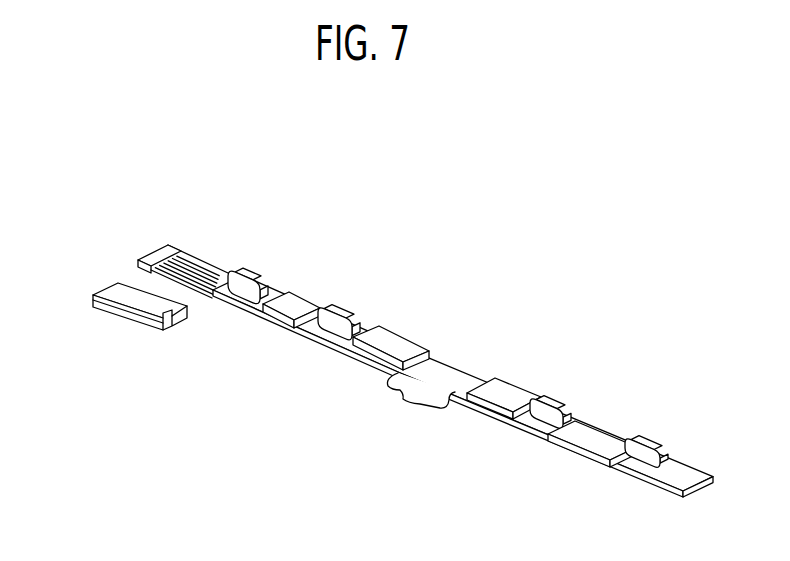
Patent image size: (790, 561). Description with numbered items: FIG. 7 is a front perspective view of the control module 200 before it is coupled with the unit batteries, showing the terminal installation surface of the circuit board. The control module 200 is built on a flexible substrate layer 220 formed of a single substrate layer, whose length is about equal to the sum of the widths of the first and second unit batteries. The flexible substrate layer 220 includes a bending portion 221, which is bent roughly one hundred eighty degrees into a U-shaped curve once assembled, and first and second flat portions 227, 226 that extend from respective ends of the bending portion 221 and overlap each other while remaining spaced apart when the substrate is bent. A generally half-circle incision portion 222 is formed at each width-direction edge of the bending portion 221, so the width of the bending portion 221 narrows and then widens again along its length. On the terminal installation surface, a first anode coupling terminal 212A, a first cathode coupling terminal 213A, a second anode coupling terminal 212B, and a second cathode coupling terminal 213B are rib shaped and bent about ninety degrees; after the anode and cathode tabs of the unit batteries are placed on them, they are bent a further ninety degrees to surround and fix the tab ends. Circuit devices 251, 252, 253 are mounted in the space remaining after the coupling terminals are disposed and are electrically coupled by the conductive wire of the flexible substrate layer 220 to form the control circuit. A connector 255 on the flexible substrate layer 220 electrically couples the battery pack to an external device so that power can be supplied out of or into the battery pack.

The control module 200 is at (675, 236).
The first anode coupling terminal 212A is at (548, 397).
The second anode coupling terminal 212B is at (240, 268).
The first cathode coupling terminal 213A is at (647, 438).
The second cathode coupling terminal 213B is at (340, 307).
The flexible substrate layer 220 is at (477, 377).
The bending portion 221 is at (401, 405).
The incision portion 222 is at (462, 369).
The second flat portion 226 is at (293, 329).
The first flat portion 227 is at (583, 438).
The circuit device 251 is at (264, 308).
The circuit device 252 is at (353, 341).
The circuit device 253 is at (490, 420).
The connector 255 is at (104, 280).